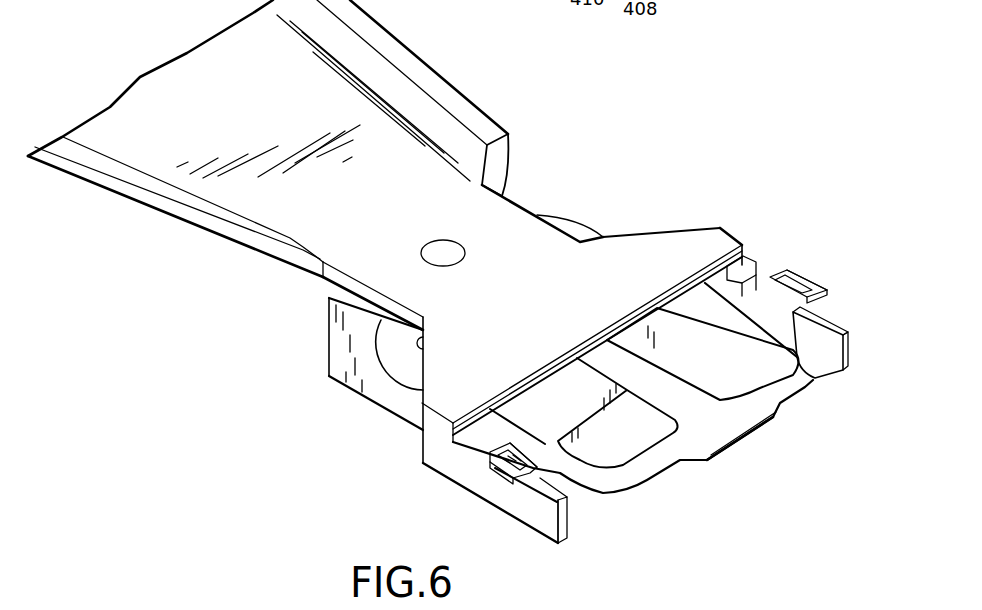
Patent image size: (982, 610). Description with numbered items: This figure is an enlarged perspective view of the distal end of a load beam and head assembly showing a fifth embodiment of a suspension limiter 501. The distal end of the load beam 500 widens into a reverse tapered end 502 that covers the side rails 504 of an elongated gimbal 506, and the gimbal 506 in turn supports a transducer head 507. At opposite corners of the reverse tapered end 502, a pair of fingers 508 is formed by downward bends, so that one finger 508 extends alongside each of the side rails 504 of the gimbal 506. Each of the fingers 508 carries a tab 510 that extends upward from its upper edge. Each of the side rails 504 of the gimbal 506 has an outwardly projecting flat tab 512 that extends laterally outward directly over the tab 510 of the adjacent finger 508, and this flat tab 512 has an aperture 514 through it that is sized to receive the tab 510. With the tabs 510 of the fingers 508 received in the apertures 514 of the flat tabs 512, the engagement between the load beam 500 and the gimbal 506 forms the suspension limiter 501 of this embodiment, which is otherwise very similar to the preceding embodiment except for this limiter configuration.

The load beam 500 is at (447, 127).
The suspension limiter 501 is at (578, 494).
The reverse tapered end 502 is at (677, 245).
The side rails 504 is at (720, 292).
The gimbal 506 is at (746, 446).
The transducer head 507 is at (353, 356).
The fingers 508 is at (547, 528).
The tab 510 is at (543, 466).
The flat tab 512 is at (480, 473).
The aperture 514 is at (510, 468).